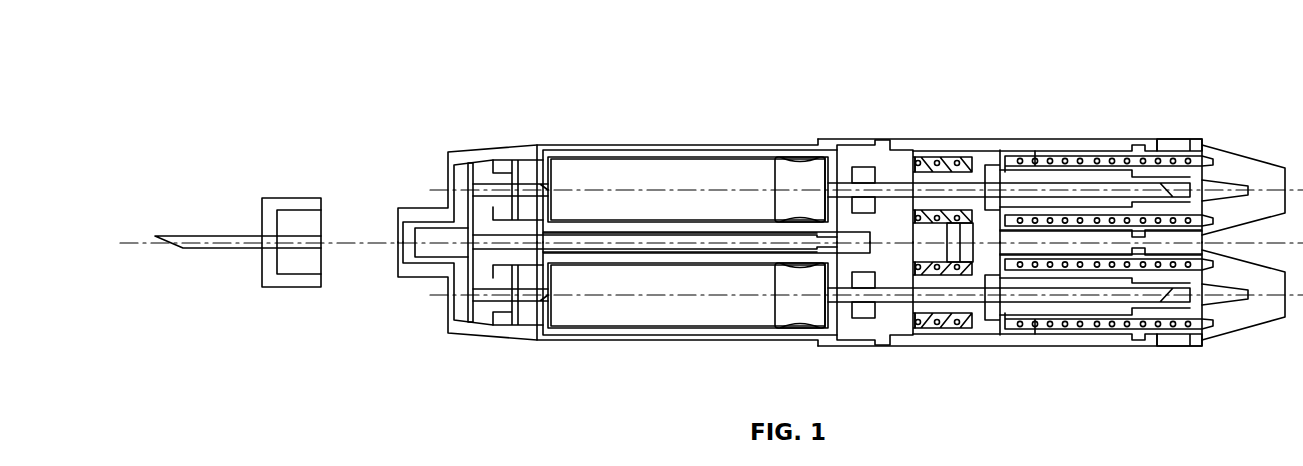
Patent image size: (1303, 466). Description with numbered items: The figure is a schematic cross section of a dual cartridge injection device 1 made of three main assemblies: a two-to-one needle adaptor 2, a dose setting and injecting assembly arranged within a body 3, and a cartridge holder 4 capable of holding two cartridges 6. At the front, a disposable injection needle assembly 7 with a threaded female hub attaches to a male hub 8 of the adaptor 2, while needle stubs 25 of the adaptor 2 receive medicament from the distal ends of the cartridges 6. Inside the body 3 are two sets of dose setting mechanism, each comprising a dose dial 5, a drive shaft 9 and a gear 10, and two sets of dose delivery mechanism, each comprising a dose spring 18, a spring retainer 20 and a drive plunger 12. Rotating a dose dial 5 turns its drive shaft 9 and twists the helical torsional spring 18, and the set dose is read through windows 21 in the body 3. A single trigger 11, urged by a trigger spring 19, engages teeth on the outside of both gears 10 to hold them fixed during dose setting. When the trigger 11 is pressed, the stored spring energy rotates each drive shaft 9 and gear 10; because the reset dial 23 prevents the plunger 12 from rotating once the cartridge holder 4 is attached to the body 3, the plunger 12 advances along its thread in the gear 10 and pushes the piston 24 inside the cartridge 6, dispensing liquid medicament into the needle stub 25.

The injection device 1 is at (1125, 61).
The 2 to 1 needle adaptor 2 is at (446, 152).
The body 3 is at (1072, 347).
The cartridge holder 4 is at (622, 145).
The dose dial 5 is at (1241, 340).
The cartridge 6 is at (695, 160).
The disposable injection needle assembly 7 is at (293, 198).
The male hub 8 is at (412, 277).
The drive shaft 9 is at (1075, 172).
The gear 10 is at (930, 156).
The trigger 11 is at (978, 330).
The plunger 12 is at (888, 298).
The helical torsional spring 18 is at (1165, 156).
The trigger spring 19 is at (930, 330).
The spring retainer 20 is at (1018, 156).
The window 21 is at (1173, 347).
The reset dial 23 is at (857, 140).
The piston 24 is at (797, 327).
The needle stub 25 is at (503, 300).